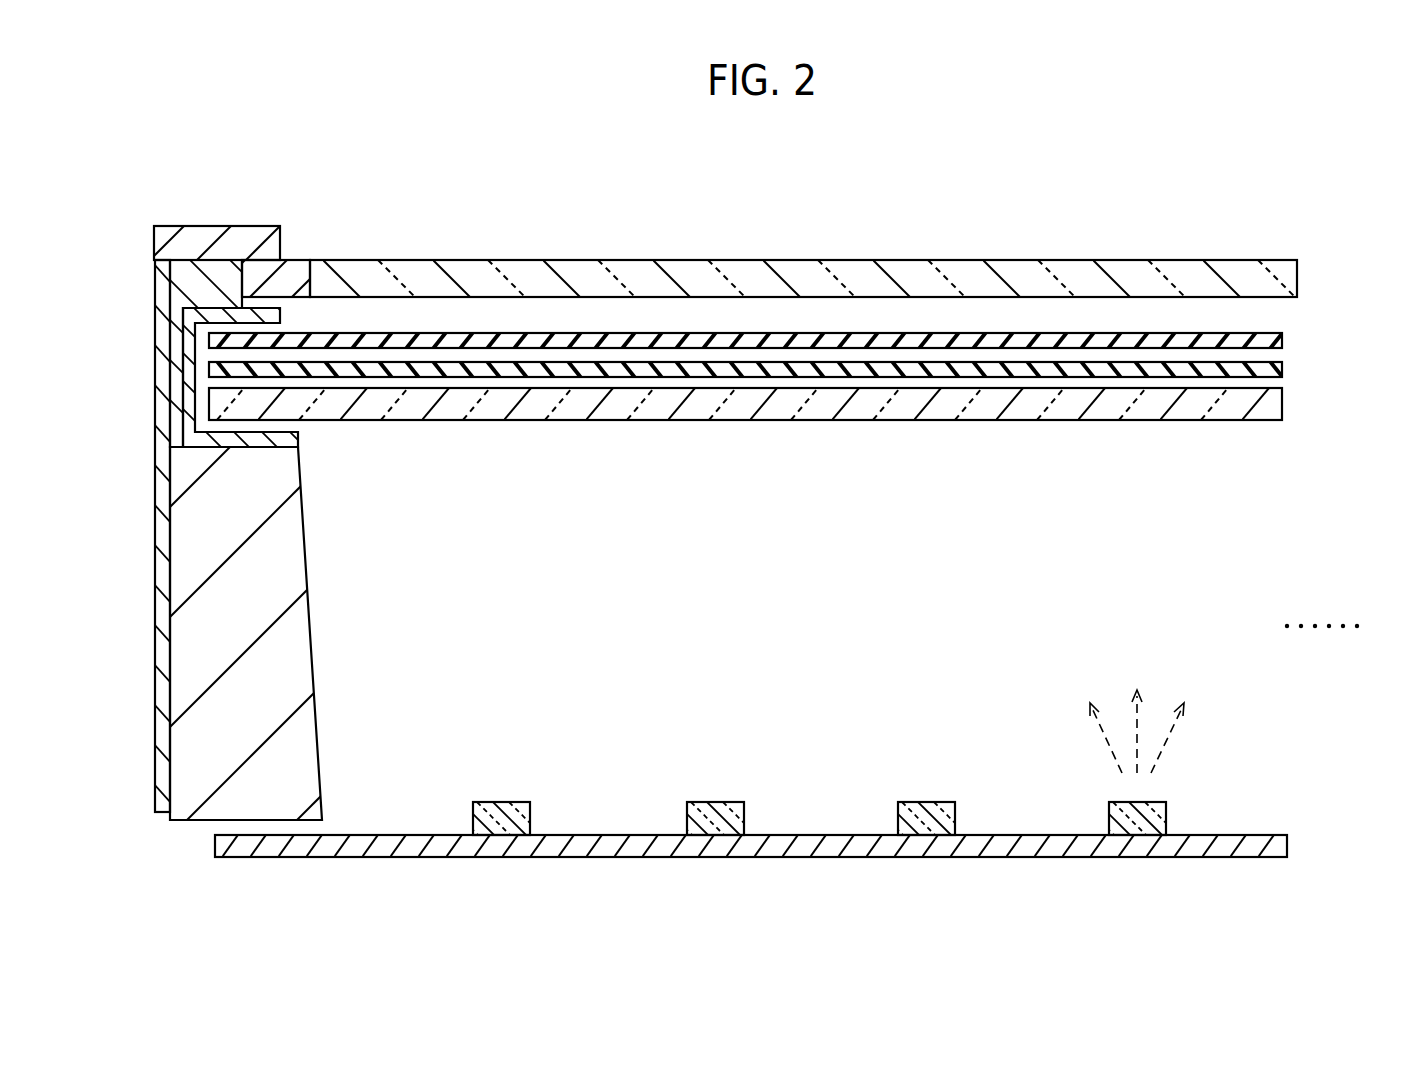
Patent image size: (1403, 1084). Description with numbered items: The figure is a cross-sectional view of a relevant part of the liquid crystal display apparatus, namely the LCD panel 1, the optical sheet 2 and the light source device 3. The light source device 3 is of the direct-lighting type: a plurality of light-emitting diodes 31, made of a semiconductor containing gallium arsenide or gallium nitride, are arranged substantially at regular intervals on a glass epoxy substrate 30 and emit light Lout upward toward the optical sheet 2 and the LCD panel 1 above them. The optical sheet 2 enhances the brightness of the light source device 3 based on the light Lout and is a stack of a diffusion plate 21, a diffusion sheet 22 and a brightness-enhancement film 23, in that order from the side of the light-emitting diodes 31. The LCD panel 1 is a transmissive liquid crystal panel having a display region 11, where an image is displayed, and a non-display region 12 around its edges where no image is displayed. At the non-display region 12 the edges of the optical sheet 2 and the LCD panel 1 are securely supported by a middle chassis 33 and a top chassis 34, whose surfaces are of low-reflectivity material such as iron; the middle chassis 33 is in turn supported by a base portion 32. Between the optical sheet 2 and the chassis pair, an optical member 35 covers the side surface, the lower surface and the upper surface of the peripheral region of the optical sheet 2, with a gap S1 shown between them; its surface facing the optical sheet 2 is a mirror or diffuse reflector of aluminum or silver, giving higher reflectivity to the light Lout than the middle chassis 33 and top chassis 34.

The LCD panel 1 is at (277, 176).
The display region 11 is at (310, 246).
The non-display region 12 is at (298, 258).
The optical sheet 2 is at (1348, 323).
The diffusion plate 21 is at (1283, 405).
The diffusion sheet 22 is at (1283, 369).
The brightness-enhancement film 23 is at (1283, 340).
The light source device 3 is at (787, 780).
The substrate 30 is at (1288, 846).
The light-emitting diodes 31 is at (1190, 772).
The base portion 32 is at (302, 603).
The middle chassis 33 is at (178, 310).
The top chassis 34 is at (182, 240).
The optical member 35 is at (297, 440).
The gap S1 is at (204, 335).
The light Lout is at (1078, 680).